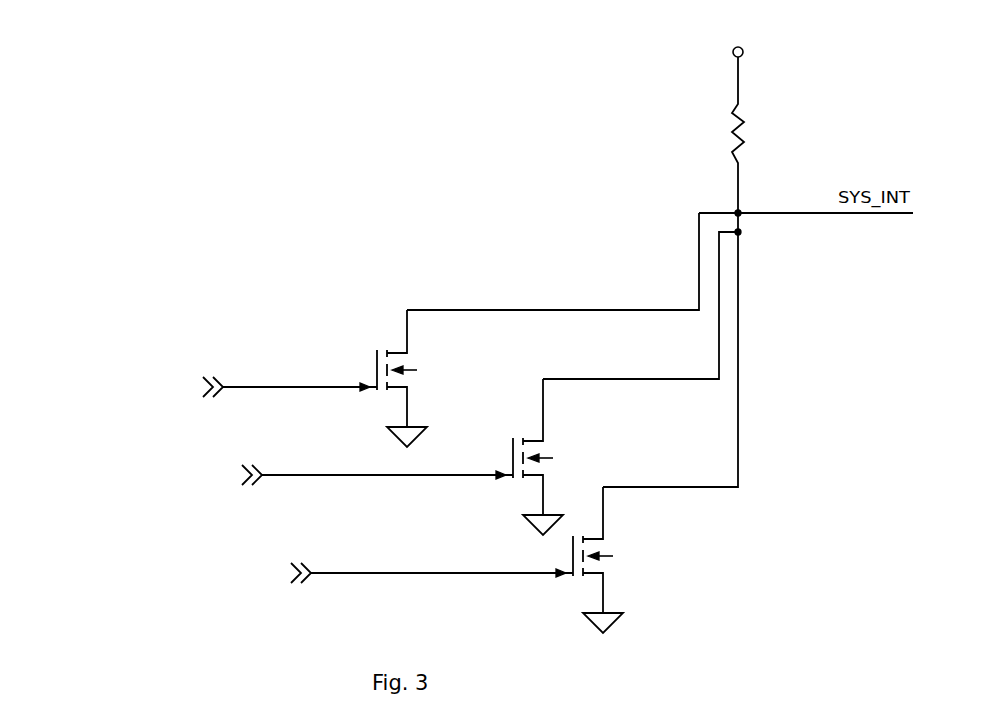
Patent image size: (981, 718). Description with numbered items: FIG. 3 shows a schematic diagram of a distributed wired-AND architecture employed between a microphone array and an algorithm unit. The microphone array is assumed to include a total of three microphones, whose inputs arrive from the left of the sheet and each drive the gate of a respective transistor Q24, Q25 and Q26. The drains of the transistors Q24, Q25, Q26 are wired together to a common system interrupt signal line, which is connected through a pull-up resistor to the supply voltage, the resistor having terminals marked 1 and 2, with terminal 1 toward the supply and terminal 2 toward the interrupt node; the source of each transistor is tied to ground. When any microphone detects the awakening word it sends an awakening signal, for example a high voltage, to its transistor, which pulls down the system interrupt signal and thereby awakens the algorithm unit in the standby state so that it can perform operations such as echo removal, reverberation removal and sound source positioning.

The pull-up resistor R1743 (pin 1 to VCC) 1 is at (760, 121).
The microphone inputs MIC1/MIC2/MIC3 from sheet 2 is at (302, 483).
The N-channel MOSFET Q24 (CES2302) Q24 is at (456, 378).
The N-channel MOSFET Q25 (CES2302) Q25 is at (592, 457).
The N-channel MOSFET Q26 (CES2302) Q26 is at (651, 560).